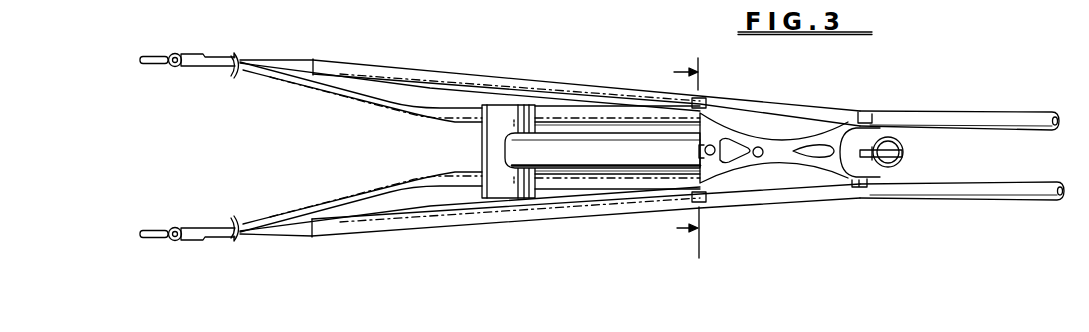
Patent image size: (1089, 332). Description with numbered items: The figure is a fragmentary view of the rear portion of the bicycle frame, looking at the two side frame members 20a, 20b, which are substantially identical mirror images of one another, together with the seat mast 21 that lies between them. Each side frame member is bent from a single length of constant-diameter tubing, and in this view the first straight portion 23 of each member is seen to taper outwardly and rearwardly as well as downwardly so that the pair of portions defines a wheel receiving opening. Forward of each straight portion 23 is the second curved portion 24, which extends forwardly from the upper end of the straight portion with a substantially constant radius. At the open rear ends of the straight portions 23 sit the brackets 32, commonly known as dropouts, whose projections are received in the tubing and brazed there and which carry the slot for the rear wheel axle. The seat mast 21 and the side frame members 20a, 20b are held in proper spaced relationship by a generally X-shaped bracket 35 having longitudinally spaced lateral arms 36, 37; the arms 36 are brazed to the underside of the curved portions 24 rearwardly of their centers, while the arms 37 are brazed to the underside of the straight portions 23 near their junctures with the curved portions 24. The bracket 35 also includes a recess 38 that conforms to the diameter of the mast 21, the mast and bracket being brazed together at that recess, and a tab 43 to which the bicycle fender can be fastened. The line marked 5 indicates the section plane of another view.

The side frame member 20a is at (990, 188).
The side frame member 20b is at (977, 116).
The seat mast 21 is at (602, 153).
The first straight portion 23 is at (453, 82).
The second curved portion 24 is at (758, 197).
The bracket 32 is at (246, 50).
The bracket 35 is at (777, 140).
The lateral arm 36 is at (872, 103).
The lateral arm 37 is at (714, 98).
The recess 38 is at (845, 156).
The tab 43 is at (698, 152).
The section line 5- 5 is at (680, 150).